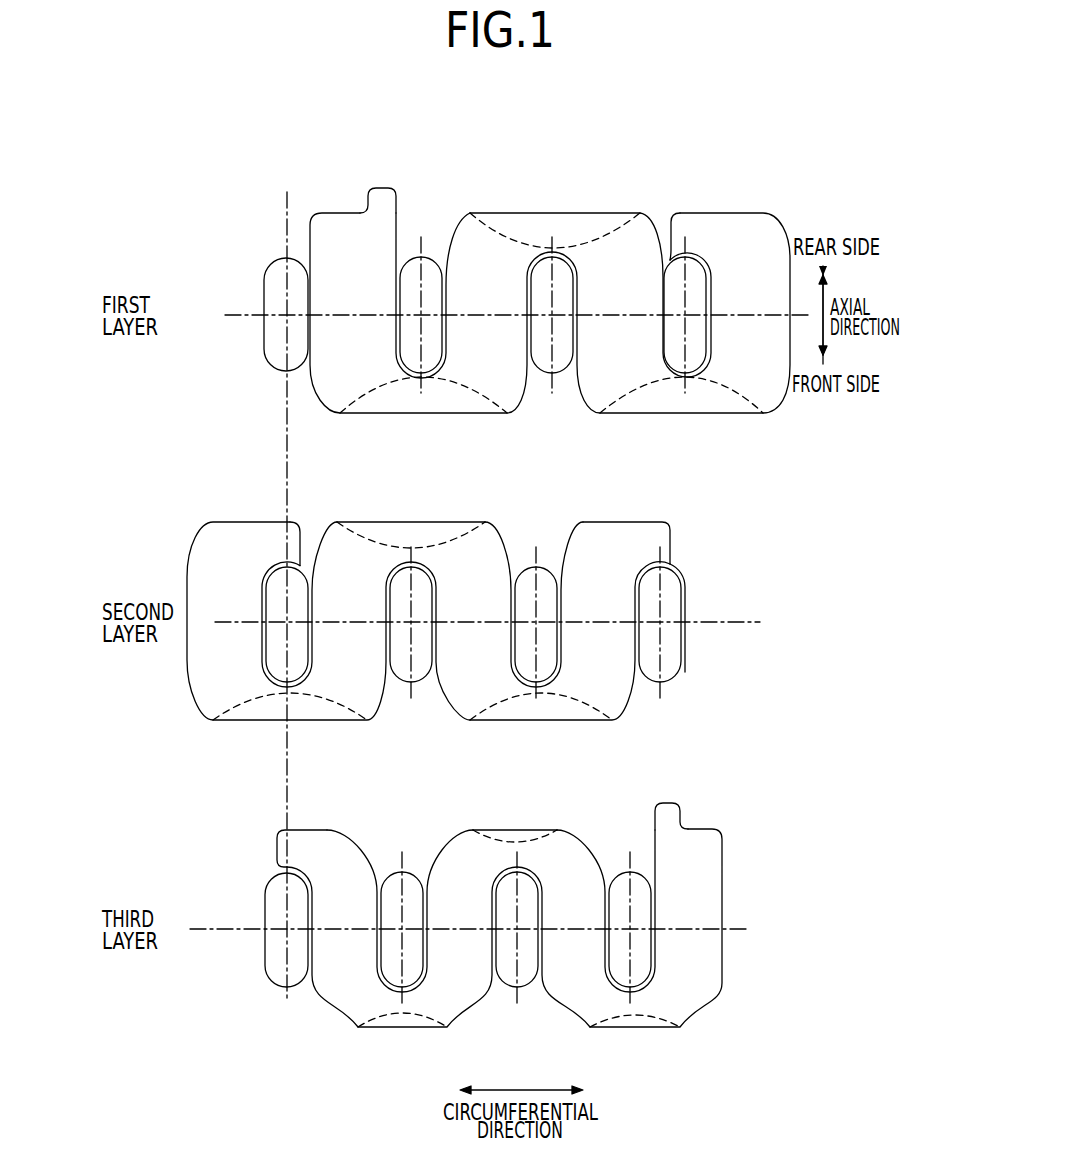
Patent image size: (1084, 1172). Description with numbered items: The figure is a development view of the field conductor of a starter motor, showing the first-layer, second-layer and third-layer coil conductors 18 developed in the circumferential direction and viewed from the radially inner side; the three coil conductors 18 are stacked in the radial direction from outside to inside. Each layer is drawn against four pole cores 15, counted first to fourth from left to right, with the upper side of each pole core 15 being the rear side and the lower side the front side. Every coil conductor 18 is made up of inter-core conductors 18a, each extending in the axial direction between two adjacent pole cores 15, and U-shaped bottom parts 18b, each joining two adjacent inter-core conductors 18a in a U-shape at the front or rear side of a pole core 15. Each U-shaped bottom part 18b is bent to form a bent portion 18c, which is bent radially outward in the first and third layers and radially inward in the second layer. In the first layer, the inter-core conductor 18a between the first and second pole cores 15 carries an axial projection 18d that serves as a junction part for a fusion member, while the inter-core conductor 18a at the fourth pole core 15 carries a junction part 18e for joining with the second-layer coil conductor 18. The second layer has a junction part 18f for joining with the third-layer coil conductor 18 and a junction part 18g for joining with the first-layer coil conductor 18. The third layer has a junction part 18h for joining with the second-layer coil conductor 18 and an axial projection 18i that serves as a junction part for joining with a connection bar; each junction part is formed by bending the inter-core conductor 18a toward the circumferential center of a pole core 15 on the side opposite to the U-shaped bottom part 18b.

The pole core 15 is at (277, 285).
The coil conductor 18 is at (741, 194).
The inter-core conductor 18a is at (362, 297).
The U-shaped bottom part 18b is at (538, 230).
The bent portion 18c is at (582, 230).
The projection 18d is at (380, 192).
The junction part 18e is at (678, 238).
The junction part 18f is at (292, 543).
The junction part 18g is at (660, 545).
The junction part 18h is at (282, 853).
The projection 18i is at (668, 820).